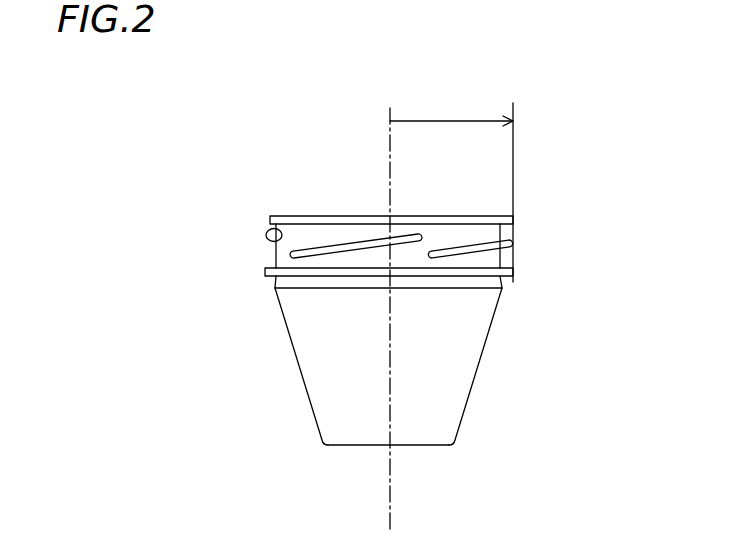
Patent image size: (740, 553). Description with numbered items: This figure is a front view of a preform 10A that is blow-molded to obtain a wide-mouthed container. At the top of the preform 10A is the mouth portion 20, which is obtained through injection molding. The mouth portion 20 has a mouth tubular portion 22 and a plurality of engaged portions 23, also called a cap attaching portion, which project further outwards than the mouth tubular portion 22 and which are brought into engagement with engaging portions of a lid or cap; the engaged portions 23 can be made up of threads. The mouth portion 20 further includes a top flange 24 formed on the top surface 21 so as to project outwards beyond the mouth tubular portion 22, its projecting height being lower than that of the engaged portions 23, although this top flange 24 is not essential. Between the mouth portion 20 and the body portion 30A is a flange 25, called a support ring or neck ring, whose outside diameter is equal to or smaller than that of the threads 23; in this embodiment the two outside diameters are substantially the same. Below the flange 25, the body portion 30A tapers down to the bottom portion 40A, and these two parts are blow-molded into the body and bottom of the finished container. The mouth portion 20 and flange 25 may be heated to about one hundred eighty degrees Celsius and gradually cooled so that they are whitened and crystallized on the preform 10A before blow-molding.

The preform 10A is at (578, 122).
The mouth portion 20 is at (245, 283).
The top surface 21 is at (461, 216).
The mouth tubular portion 22 is at (348, 235).
The engaged portions (cap attaching portion) 23 is at (513, 243).
The top flange 24 is at (513, 218).
The flange (support ring or neck ring) 25 is at (513, 272).
The body portion 30A is at (473, 377).
The bottom portion 40A is at (423, 447).